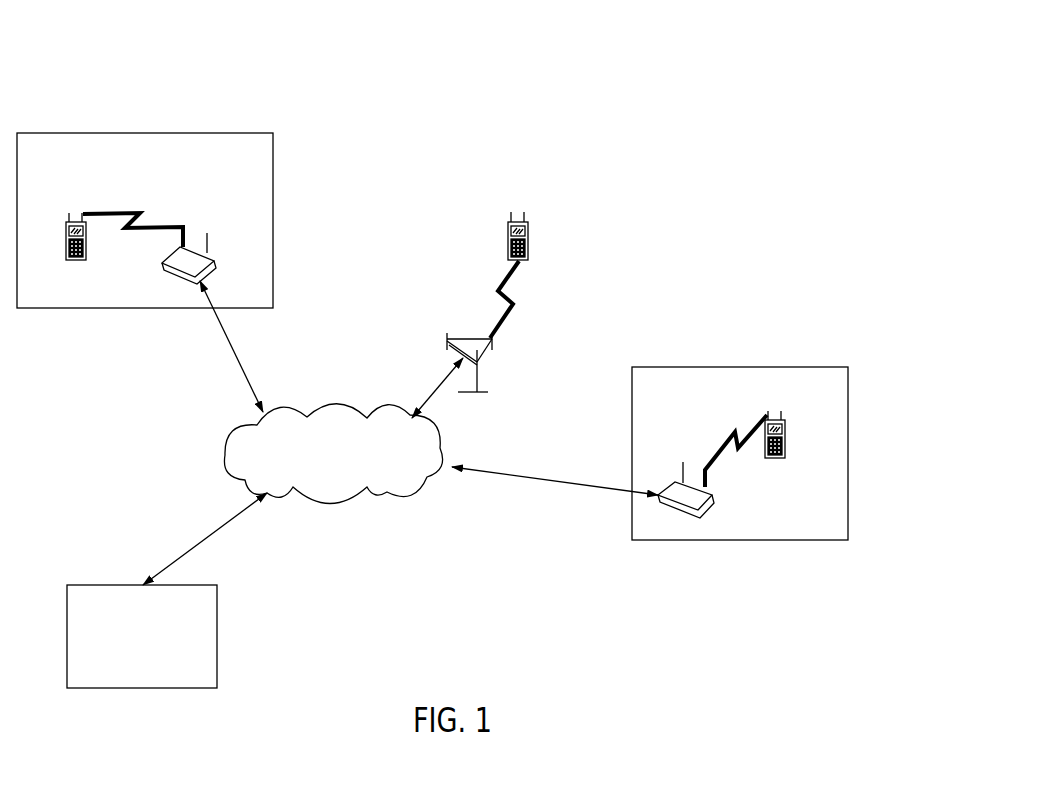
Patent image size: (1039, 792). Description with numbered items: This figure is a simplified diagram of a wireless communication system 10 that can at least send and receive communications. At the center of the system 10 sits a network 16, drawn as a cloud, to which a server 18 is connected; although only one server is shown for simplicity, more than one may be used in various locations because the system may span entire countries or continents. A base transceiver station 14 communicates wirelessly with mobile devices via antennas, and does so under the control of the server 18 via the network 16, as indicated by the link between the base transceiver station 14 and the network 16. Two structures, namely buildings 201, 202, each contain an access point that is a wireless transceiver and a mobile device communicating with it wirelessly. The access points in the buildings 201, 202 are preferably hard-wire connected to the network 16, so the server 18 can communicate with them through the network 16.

The communication system 10 is at (640, 67).
The base transceiver station 14 is at (468, 337).
The network 16 is at (228, 452).
The server 18 is at (107, 585).
The building 201 is at (742, 367).
The building 202 is at (145, 133).